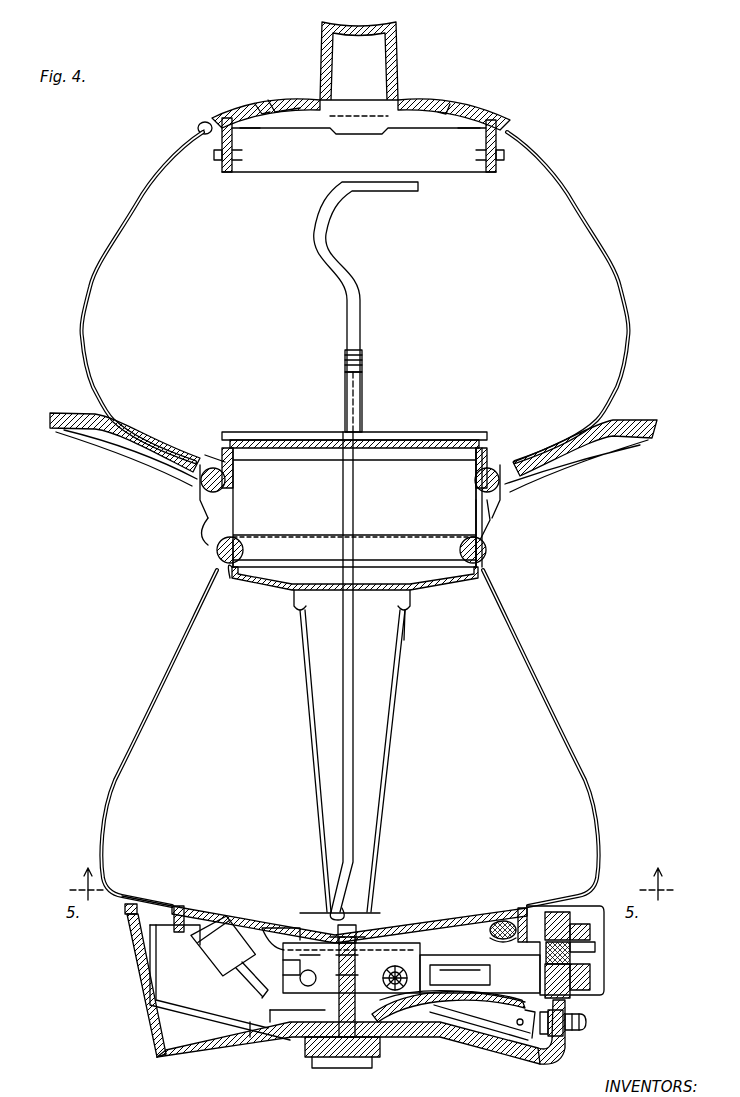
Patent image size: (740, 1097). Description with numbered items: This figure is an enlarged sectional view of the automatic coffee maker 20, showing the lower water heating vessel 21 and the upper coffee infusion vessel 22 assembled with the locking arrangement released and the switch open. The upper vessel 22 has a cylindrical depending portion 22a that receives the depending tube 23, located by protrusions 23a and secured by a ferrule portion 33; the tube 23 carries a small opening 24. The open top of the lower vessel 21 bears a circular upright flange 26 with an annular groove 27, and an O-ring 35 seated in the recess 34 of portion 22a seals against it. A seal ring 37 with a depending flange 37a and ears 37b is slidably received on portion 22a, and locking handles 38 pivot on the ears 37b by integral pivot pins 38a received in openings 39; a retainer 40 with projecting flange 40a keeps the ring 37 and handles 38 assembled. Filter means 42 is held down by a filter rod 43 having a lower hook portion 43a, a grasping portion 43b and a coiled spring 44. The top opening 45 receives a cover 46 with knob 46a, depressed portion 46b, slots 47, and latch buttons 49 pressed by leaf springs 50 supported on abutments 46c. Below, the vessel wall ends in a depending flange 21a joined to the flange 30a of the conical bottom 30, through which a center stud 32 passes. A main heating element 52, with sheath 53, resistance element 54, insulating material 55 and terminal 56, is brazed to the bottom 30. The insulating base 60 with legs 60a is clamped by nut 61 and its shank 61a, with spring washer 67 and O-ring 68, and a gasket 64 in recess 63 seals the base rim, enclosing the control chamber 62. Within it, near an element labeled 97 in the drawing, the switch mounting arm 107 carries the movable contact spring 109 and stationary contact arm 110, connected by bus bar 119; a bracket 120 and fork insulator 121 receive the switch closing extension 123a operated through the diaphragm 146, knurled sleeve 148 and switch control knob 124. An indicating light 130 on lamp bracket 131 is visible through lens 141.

The automatic coffee maker 20 is at (96, 586).
The lower water heating chamber or vessel 21 is at (570, 704).
The annular depending flange 21a is at (160, 902).
The upper coffee infusion chamber or vessel 22 is at (605, 272).
The cylindrical depending portion 22a is at (476, 486).
The depending tube 23 is at (390, 718).
The protrusions 23a is at (300, 620).
The small opening 24 is at (402, 640).
The circular upright flange 26 is at (216, 550).
The annular recess or groove 27 is at (205, 532).
The bottom 30 is at (226, 918).
The depending peripheral flange 30a is at (180, 906).
The center stud 32 is at (358, 930).
The ferrule portion 33 is at (326, 567).
The annular outwardly directed recess 34 is at (236, 552).
The O-ring 35 is at (486, 548).
The seal ring 37 is at (502, 488).
The depending annular flange 37a is at (476, 514).
The upwardly extending ears 37b is at (200, 478).
The locking handles 38 is at (85, 412).
The integral pivot pin 38a is at (226, 446).
The opening 39 is at (214, 452).
The retainer 40 is at (274, 590).
The projecting annular flange 40a is at (236, 580).
The filter or strainer means 42 is at (385, 421).
The filter rod 43 is at (352, 656).
The hook portion 43a is at (322, 895).
The upper end portion 43b is at (385, 186).
The coiled spring 44 is at (362, 360).
The top opening 45 is at (205, 126).
The cover 46 is at (483, 112).
The knob portion 46a is at (400, 60).
The depressed central annular portion 46b is at (290, 100).
The abutments 46c is at (240, 132).
The slots 47 is at (266, 106).
The latch buttons 49 is at (216, 158).
The leaf springs 50 is at (242, 158).
The main heating element 52 is at (208, 936).
The outer metal sheath 53 is at (500, 924).
The resistance element 54 is at (508, 924).
The electrical insulating material 55 is at (523, 914).
The terminal 56 is at (246, 974).
The insulating base 60 is at (146, 1012).
The lug portions 60a is at (158, 1058).
The nut 61 is at (340, 1057).
The shank portion 61a is at (352, 1068).
The control chamber 62 is at (168, 985).
The annular peripheral recess 63 is at (128, 916).
The sealing gasket 64 is at (554, 906).
The spring washer 67 is at (366, 1030).
The O-ring 68 is at (300, 1037).
The bracket 97 is at (278, 940).
The switch mounting arm 107 is at (300, 950).
The movable contact supporting spring 109 is at (440, 985).
The stationary contact supporting arm 110 is at (408, 985).
The bus bar 119 is at (276, 1022).
The bracket 120 is at (490, 982).
The fork insulator 121 is at (566, 1010).
The switch closing extension 123a is at (570, 960).
The switch control knob 124 is at (590, 978).
The indicating light 130 is at (510, 1036).
The lamp bracket 131 is at (462, 1026).
The lens 141 is at (588, 1024).
The resilient annular plug member or diaphragm 146 is at (592, 950).
The knurled sleeve 148 is at (590, 936).